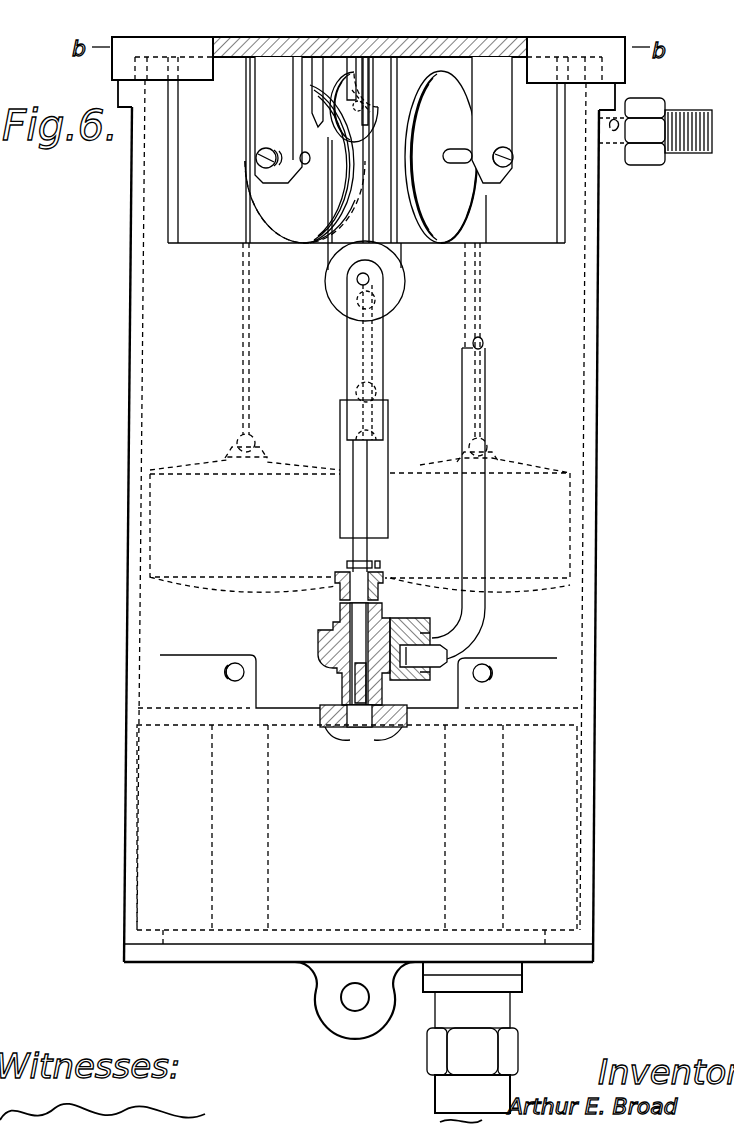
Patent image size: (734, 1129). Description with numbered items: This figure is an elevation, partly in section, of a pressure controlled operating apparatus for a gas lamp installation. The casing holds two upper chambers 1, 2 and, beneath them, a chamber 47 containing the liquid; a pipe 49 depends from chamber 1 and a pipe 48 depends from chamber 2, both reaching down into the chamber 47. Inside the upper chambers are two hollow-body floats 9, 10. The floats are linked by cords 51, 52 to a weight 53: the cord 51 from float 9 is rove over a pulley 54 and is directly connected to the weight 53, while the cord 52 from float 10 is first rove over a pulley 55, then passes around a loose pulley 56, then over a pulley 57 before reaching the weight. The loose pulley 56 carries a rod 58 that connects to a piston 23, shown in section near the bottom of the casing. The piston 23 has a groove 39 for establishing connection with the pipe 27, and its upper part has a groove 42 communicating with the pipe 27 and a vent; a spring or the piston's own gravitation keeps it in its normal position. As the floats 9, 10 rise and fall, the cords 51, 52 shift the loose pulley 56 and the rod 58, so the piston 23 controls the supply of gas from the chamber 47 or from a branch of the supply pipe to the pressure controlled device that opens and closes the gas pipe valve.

The chamber 1 is at (173, 358).
The chamber 2 is at (540, 356).
The float 9 is at (245, 524).
The float 10 is at (477, 525).
The piston 23 is at (336, 634).
The pipe 27 is at (708, 112).
The groove 39 is at (336, 679).
The groove 42 is at (388, 614).
The chamber 47 is at (359, 729).
The pipe 48 is at (499, 852).
The pipe 49 is at (253, 838).
The cord 51 is at (245, 226).
The cord 52 is at (480, 226).
The weight 53 is at (383, 449).
The pulley 54 is at (262, 187).
The pulley 55 is at (452, 189).
The loose pulley 56 is at (330, 286).
The pulley 57 is at (352, 72).
The rod 58 is at (352, 511).